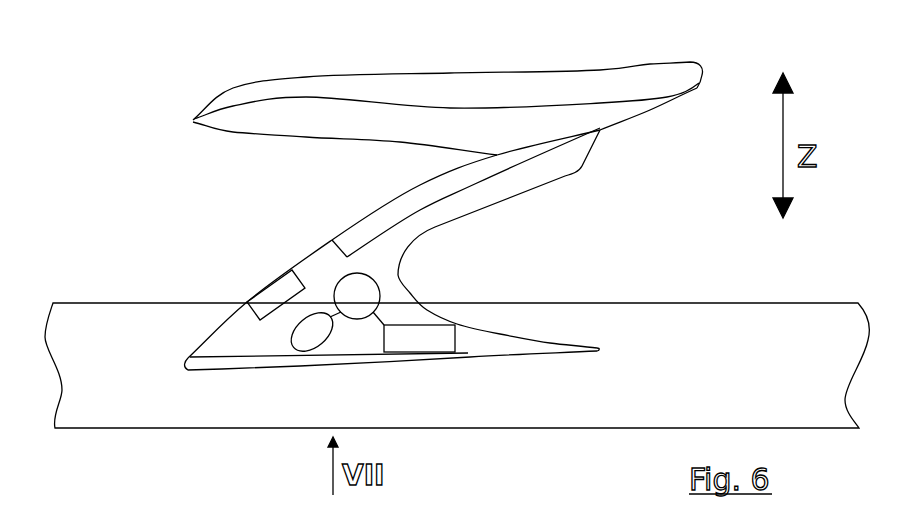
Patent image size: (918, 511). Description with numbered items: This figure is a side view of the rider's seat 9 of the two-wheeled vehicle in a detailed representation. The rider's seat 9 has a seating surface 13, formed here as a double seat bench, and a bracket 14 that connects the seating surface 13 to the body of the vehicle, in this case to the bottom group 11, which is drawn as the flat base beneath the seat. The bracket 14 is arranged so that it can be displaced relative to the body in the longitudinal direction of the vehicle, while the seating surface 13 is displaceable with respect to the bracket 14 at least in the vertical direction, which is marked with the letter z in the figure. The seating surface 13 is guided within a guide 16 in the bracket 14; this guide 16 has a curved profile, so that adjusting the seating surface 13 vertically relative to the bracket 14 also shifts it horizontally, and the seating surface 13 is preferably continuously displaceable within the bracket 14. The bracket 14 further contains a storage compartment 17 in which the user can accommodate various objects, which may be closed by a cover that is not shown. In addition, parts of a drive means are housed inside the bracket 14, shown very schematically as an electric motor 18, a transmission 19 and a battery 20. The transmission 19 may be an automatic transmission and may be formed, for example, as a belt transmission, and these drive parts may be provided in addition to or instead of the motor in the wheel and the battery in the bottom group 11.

The rider's seat 9 is at (182, 116).
The bottom group 11 is at (672, 302).
The seating surface 13 is at (557, 90).
The bracket 14 is at (318, 260).
The guide 16 is at (463, 180).
The storage compartment 17 is at (273, 297).
The electric motor 18 is at (385, 279).
The transmission 19 is at (298, 338).
The battery 20 is at (443, 333).